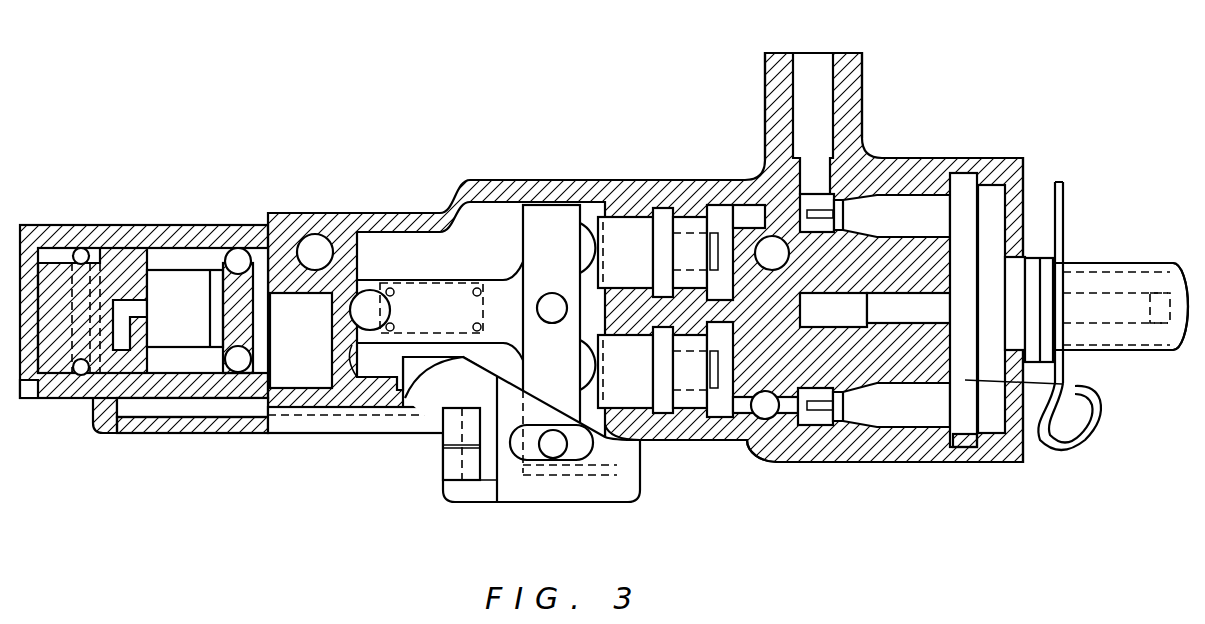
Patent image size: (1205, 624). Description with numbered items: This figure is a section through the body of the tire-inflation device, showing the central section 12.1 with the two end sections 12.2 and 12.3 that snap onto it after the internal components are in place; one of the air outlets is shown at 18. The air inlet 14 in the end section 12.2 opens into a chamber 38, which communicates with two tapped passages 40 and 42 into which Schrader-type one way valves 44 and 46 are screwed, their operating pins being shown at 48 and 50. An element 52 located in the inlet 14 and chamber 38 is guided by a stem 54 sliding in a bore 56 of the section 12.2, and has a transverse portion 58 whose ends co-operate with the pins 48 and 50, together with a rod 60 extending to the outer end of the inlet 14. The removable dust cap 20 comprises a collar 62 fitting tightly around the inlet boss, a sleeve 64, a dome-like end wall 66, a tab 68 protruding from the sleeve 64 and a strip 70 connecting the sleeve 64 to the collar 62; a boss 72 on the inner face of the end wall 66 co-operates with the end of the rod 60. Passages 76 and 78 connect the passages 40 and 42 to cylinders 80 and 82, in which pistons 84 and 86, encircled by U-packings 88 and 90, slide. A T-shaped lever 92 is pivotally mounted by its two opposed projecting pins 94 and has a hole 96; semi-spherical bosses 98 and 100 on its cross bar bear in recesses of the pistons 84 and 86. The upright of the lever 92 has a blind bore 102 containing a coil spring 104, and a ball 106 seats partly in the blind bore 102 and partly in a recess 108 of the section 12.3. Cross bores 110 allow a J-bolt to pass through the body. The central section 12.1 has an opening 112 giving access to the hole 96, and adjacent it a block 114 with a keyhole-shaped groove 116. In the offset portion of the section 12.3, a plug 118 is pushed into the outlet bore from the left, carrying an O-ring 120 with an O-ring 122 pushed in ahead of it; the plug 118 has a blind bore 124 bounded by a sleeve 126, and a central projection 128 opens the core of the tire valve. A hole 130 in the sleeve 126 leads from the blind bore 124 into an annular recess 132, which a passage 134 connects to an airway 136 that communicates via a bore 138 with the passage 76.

The central section 12.1 is at (614, 181).
The end section 12.2 is at (1025, 165).
The end section 12.3 is at (308, 434).
The air inlet 14 is at (1047, 298).
The air outlet 18 is at (862, 96).
The dust cap 20 is at (1106, 279).
The chamber 38 is at (752, 446).
The passage 40 is at (808, 428).
The passage 42 is at (873, 196).
The one way valve 44 is at (887, 416).
The one way valve 46 is at (917, 192).
The operating pin 48 is at (968, 447).
The operating pin 50 is at (950, 210).
The element 52 is at (1063, 372).
The stem 54 is at (862, 312).
The bore 56 is at (800, 294).
The transverse portion 58 is at (970, 293).
The rod 60 is at (1112, 292).
The collar 62 is at (1052, 263).
The sleeve 64 is at (1090, 270).
The end wall 66 is at (1178, 350).
The tab 68 is at (1063, 186).
The strip 70 is at (1100, 418).
The boss 72 is at (1147, 300).
The passage 76 is at (772, 462).
The passage 78 is at (806, 158).
The cylinder 80 is at (717, 440).
The cylinder 82 is at (720, 205).
The piston 84 is at (652, 410).
The piston 86 is at (635, 217).
The U-packing 88 is at (665, 414).
The U-packing 90 is at (702, 208).
The T-shaped lever 92 is at (560, 202).
The pins 94 is at (565, 298).
The hole 96 is at (577, 458).
The semi-spherical boss 98 is at (583, 362).
The semi-spherical boss 100 is at (582, 248).
The blind bore 102 is at (445, 281).
The coil spring 104 is at (378, 292).
The ball 106 is at (402, 304).
The recess 108 is at (358, 350).
The cross bore 110 is at (315, 235).
The opening 112 is at (514, 502).
The block 114 is at (443, 475).
The groove 116 is at (443, 442).
The plug 118 is at (22, 395).
The O-ring 120 is at (90, 402).
The O-ring 122 is at (252, 358).
The blind bore 124 is at (196, 272).
The sleeve 126 is at (178, 228).
The central projection 128 is at (146, 308).
The hole 130 is at (150, 400).
The annular recess 132 is at (120, 248).
The passage 134 is at (118, 435).
The airway 136 is at (213, 434).
The bore 138 is at (748, 452).